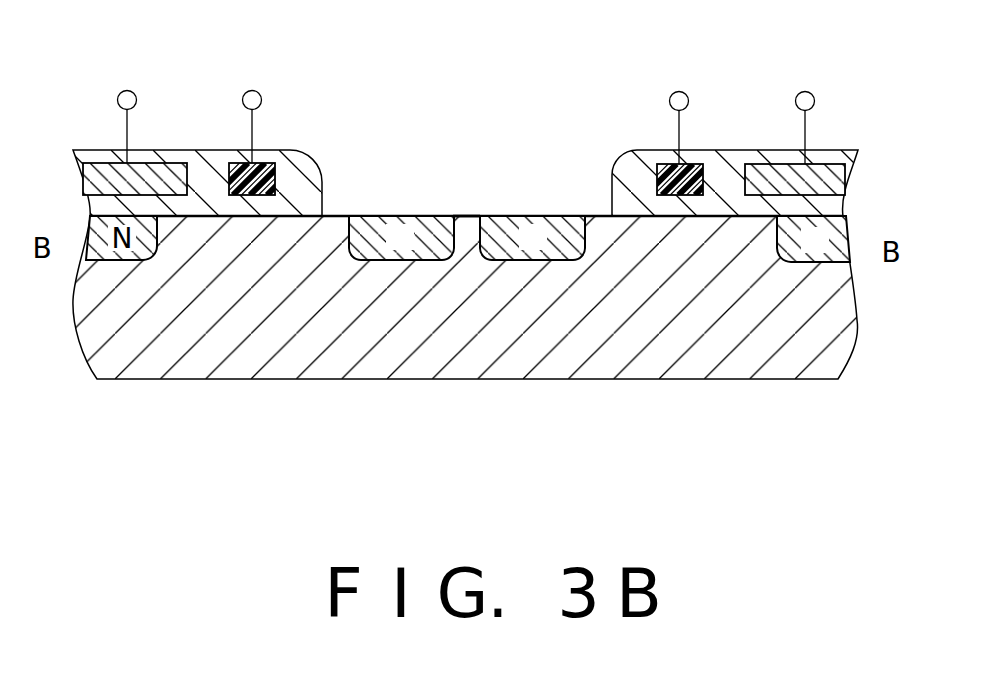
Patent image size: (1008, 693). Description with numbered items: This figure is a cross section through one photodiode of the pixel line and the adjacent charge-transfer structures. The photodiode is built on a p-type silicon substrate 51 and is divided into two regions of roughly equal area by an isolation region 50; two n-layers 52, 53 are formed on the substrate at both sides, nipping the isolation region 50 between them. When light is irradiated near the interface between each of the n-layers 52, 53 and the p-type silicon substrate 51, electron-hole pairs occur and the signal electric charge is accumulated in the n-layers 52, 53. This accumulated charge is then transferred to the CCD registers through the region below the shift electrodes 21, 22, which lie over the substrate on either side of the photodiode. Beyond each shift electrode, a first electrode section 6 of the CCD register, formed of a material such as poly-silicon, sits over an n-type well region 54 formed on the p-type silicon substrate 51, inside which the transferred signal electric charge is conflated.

The first electrode section 6 is at (100, 168).
The shift electrode 21 is at (702, 165).
The shift electrode 22 is at (233, 163).
The isolation region 50 is at (467, 227).
The p-type silicon substrate 51 is at (795, 368).
The n-layer 52 is at (392, 218).
The n-layer 53 is at (553, 220).
The n-type well region 54 is at (840, 225).